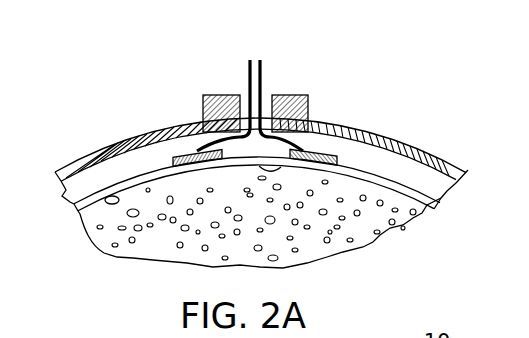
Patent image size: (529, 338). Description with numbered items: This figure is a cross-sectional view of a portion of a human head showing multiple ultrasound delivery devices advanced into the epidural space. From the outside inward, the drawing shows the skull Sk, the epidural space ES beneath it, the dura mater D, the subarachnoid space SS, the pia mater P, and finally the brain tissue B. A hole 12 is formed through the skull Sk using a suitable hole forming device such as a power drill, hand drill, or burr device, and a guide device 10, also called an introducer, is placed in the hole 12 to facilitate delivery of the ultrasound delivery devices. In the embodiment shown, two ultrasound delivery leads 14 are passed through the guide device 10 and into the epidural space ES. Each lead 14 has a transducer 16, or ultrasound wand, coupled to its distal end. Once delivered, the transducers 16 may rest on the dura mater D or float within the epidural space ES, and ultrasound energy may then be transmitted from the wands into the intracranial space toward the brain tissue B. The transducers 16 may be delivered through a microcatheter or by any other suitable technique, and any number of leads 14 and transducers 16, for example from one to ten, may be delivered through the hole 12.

The guide device 10 is at (222, 93).
The hole 12 is at (266, 93).
The ultrasound delivery lead 14 is at (246, 63).
The transducer 16 is at (185, 149).
The skull Sk is at (346, 125).
The epidural space ES is at (387, 161).
The dura mater D is at (77, 206).
The pia mater P is at (90, 209).
The subarachnoid space SS is at (117, 196).
The brain tissue B is at (259, 253).